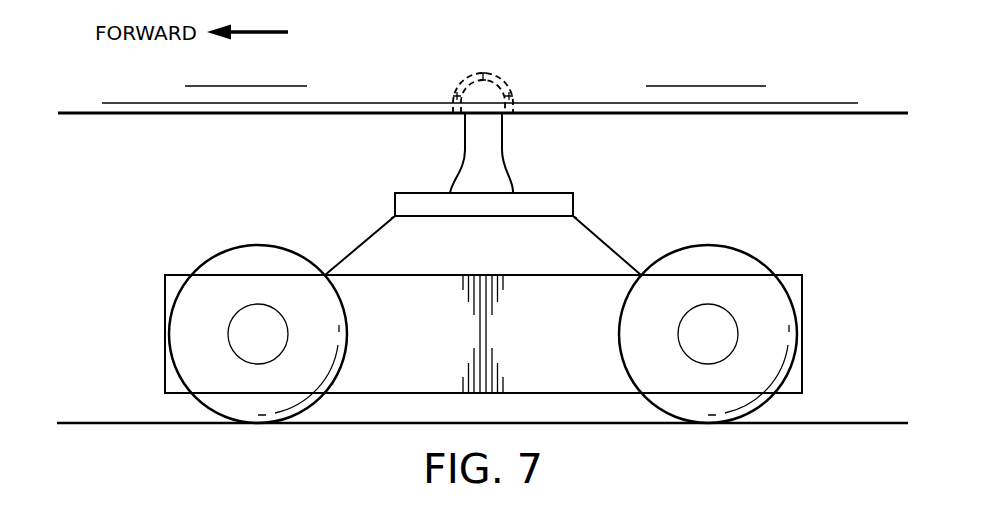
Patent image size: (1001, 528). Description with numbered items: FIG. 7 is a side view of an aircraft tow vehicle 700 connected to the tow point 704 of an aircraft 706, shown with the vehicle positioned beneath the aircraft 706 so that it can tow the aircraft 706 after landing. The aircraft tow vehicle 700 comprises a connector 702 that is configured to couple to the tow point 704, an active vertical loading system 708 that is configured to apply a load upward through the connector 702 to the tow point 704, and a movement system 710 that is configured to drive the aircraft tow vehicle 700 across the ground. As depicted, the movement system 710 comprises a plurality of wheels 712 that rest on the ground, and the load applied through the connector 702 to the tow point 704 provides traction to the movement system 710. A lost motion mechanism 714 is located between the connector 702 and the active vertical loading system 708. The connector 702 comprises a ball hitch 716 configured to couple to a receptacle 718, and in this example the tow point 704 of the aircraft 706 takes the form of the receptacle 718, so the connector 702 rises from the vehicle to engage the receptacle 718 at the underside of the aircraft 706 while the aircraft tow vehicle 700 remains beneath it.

The aircraft tow vehicle 700 is at (448, 218).
The connector 702 is at (503, 116).
The tow point 704 is at (483, 63).
The aircraft 706 is at (729, 115).
The active vertical loading system 708 is at (365, 242).
The movement system 710 is at (136, 333).
The plurality of wheels 712 is at (220, 252).
The lost motion mechanism 714 is at (420, 192).
The ball hitch 716 is at (512, 95).
The receptacle 718 is at (455, 95).